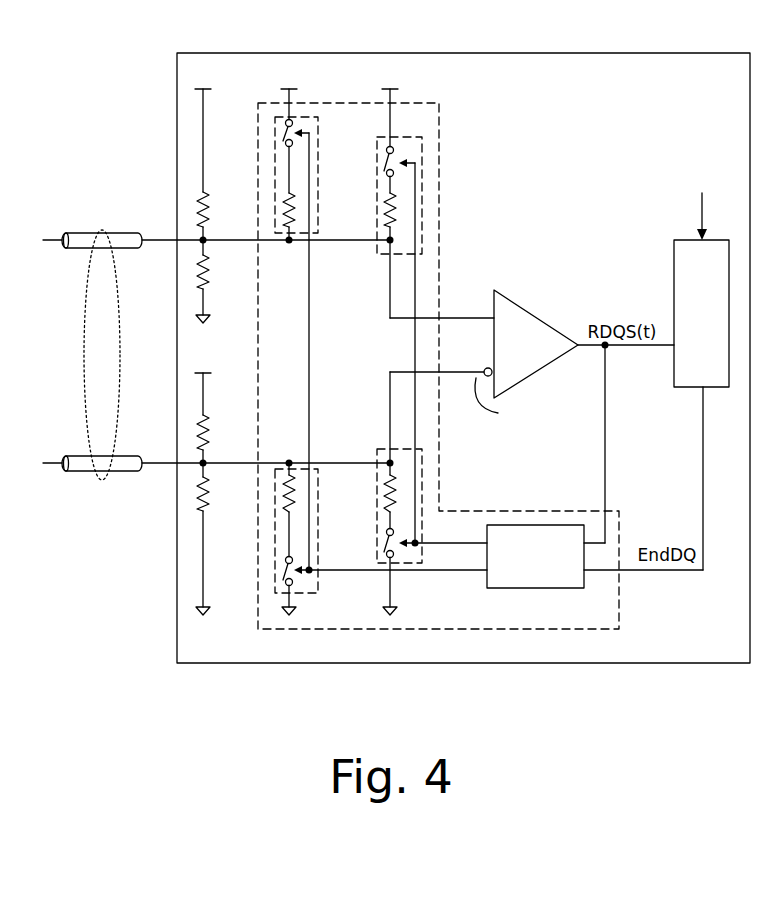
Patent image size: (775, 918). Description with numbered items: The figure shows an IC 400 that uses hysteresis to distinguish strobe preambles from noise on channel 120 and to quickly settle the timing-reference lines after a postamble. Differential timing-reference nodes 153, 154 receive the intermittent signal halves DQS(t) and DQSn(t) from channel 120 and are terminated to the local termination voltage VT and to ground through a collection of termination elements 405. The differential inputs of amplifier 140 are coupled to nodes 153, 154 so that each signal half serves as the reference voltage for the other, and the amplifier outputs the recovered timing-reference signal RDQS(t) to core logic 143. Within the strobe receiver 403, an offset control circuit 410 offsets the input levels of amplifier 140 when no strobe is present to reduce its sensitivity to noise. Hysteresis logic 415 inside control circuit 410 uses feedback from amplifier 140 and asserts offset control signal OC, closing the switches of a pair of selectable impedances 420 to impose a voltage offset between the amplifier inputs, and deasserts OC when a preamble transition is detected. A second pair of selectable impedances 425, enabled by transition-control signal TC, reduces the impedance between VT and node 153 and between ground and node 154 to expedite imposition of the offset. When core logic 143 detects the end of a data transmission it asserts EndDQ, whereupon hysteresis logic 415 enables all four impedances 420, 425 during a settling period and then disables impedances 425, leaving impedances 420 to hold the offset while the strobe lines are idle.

The channel 120 is at (86, 320).
The timing-reference node 153 is at (208, 245).
The timing-reference node 154 is at (208, 460).
The termination elements 405 is at (208, 209).
The selectable impedances 425 is at (318, 221).
The selectable impedances 420 is at (377, 172).
The amplifier 140 is at (502, 369).
The core logic 143 is at (687, 374).
The hysteresis logic 415 is at (520, 579).
The offset control circuit 410 is at (580, 622).
The IC 400 is at (487, 657).
The strobe receiver 403 is at (542, 212).